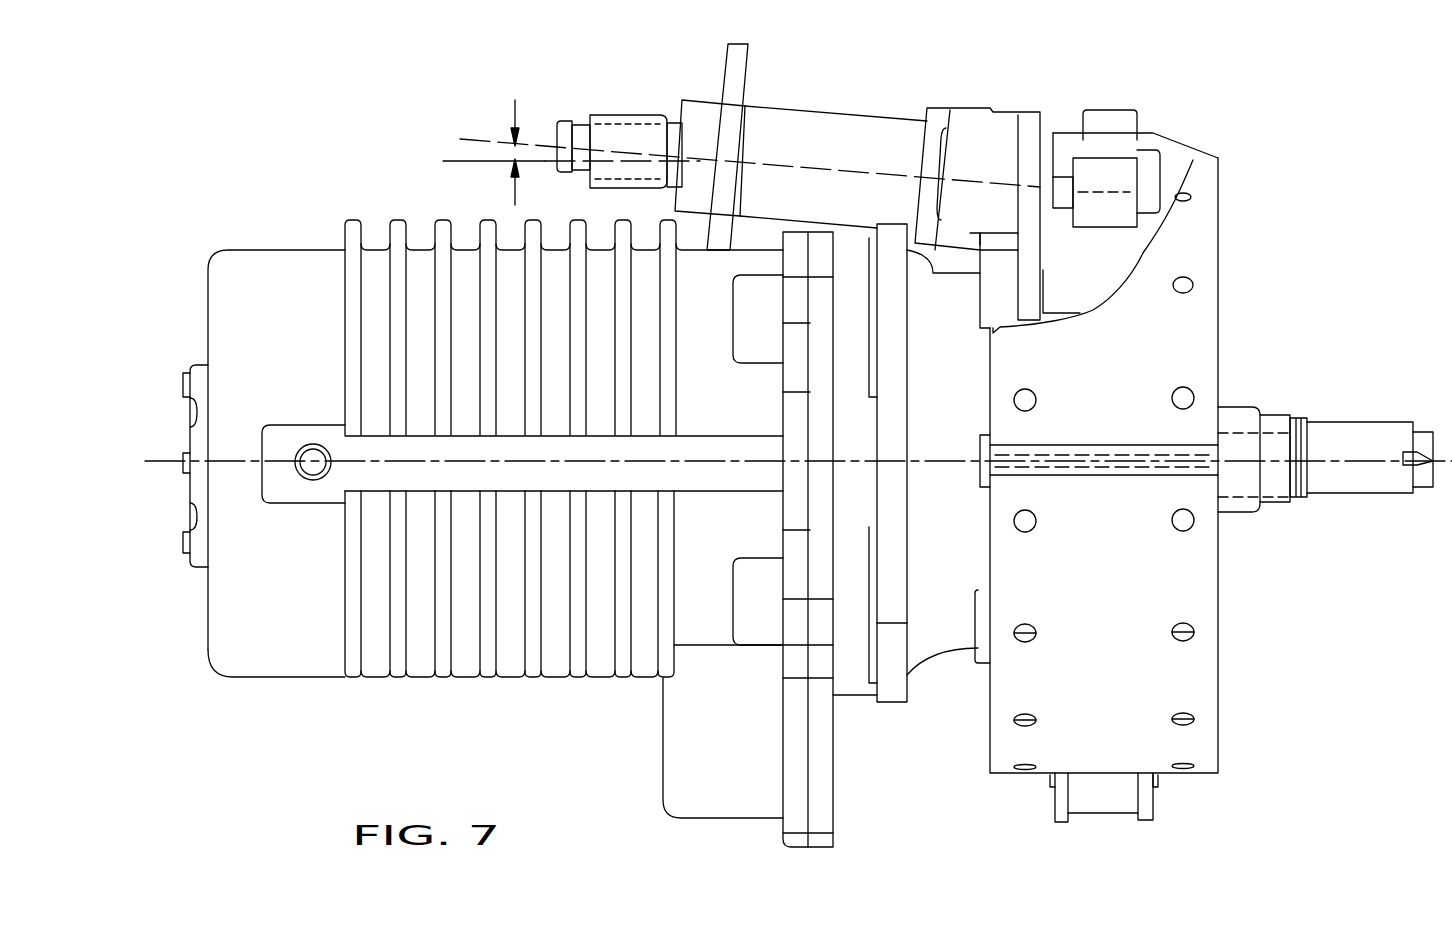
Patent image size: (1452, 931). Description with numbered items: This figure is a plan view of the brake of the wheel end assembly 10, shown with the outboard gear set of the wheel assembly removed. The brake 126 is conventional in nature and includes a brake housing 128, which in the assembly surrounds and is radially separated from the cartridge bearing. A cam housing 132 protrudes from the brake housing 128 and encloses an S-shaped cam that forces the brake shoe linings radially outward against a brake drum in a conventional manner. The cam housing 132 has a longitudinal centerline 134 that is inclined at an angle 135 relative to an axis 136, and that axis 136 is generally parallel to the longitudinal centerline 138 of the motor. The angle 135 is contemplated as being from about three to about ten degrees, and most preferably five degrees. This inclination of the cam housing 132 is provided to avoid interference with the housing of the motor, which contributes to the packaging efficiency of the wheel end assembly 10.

The wheel end assembly 10 is at (983, 80).
The brake 126 is at (1180, 133).
The brake housing 128 is at (1200, 240).
The cam housing 132 is at (788, 107).
The longitudinal centerline 134 is at (477, 137).
The angle 135 is at (520, 110).
The axis 136 is at (462, 163).
The longitudinal centerline of motor 138 is at (230, 458).